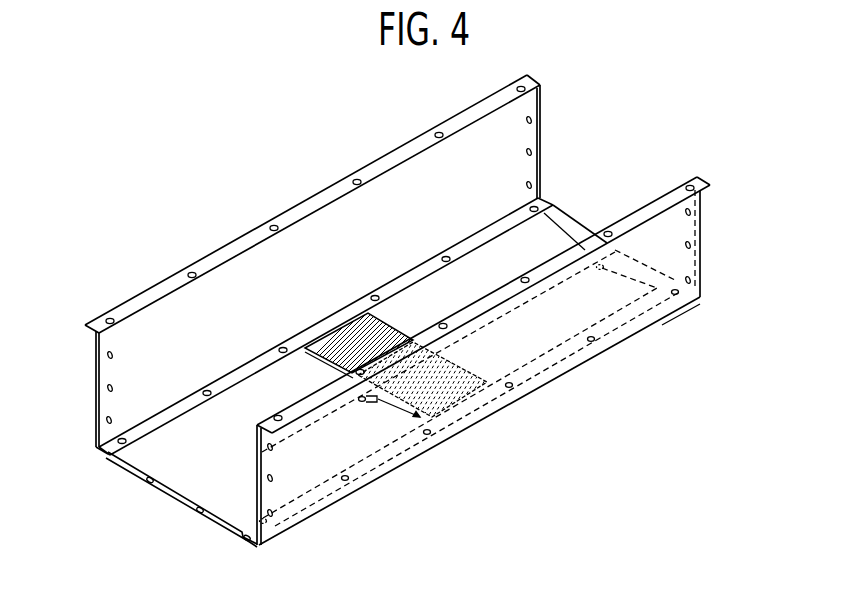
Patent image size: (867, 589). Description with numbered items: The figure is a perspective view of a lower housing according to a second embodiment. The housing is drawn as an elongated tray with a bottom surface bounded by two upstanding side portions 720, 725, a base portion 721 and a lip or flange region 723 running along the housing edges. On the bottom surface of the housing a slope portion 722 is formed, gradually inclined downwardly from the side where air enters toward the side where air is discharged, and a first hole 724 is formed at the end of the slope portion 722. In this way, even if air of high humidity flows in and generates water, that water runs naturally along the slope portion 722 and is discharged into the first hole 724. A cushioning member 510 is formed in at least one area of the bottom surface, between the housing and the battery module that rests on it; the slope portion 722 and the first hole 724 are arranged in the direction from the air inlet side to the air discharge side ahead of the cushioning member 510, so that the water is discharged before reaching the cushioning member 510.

The cushioning member 510 is at (390, 322).
The second side plate 720 is at (688, 259).
The base plate 721 is at (293, 412).
The slope portion 722 is at (212, 497).
The bottom flange 723 is at (252, 520).
The first hole 724 is at (377, 400).
The first side plate 725 is at (108, 453).